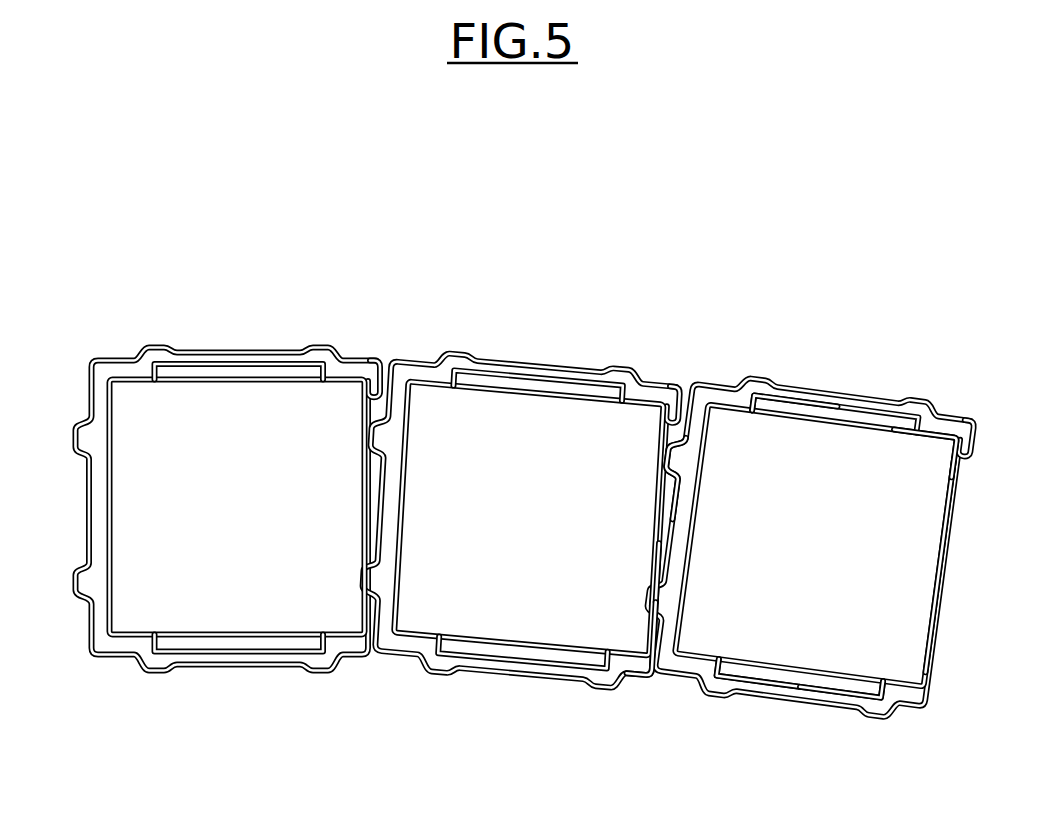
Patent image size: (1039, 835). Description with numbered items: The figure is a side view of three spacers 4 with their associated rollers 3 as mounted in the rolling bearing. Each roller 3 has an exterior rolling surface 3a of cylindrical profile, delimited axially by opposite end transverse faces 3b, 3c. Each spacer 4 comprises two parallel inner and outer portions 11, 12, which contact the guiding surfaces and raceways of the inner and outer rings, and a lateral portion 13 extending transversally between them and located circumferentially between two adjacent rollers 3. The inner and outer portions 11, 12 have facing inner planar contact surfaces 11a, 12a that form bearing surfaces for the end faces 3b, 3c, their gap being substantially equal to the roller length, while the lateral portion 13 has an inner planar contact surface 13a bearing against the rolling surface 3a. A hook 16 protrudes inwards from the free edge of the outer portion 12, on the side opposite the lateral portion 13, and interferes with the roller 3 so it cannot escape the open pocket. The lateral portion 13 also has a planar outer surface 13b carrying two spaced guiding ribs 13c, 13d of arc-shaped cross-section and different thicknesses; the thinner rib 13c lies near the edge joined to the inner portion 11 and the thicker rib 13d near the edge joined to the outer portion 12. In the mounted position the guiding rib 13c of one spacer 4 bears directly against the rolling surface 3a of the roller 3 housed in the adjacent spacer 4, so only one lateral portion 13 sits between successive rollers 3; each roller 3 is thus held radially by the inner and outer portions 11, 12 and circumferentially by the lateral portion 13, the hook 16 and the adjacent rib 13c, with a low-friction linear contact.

The roller 3 is at (230, 520).
The rolling surface 3a is at (945, 577).
The end transverse face 3b is at (857, 693).
The end transverse face 3c is at (938, 418).
The spacer 4 is at (521, 511).
The inner portion 11 is at (240, 672).
The inner planar contact surface 11a is at (752, 668).
The outer portion 12 is at (240, 349).
The inner planar contact surface 12a is at (783, 427).
The lateral portion 13 is at (88, 509).
The inner planar contact surface 13a is at (675, 456).
The planar outer surface 13b is at (662, 553).
The guiding rib 13c is at (663, 585).
The guiding rib 13d is at (659, 518).
The hook 16 is at (982, 445).